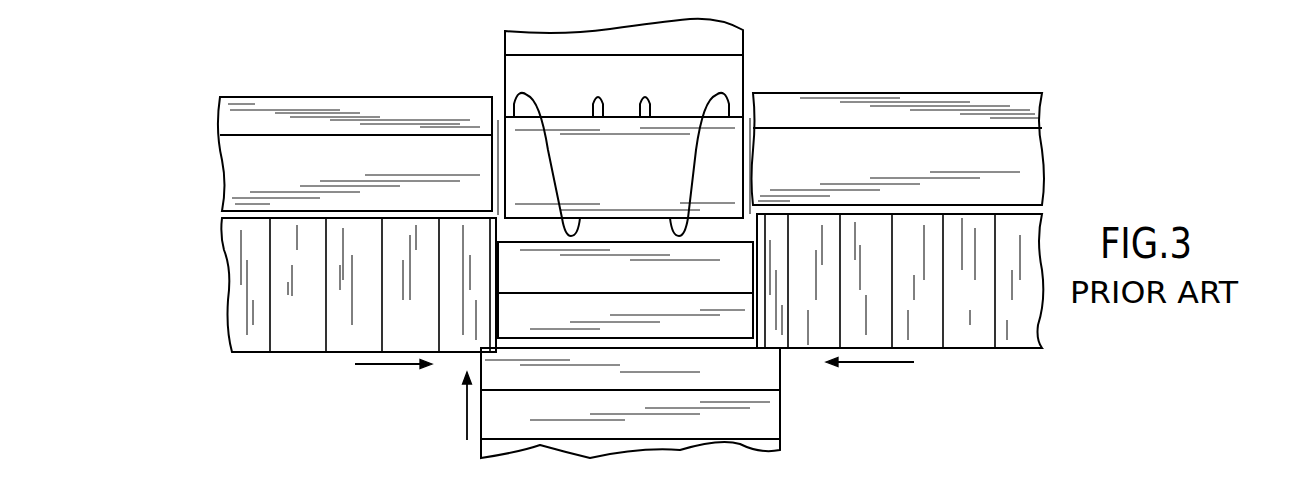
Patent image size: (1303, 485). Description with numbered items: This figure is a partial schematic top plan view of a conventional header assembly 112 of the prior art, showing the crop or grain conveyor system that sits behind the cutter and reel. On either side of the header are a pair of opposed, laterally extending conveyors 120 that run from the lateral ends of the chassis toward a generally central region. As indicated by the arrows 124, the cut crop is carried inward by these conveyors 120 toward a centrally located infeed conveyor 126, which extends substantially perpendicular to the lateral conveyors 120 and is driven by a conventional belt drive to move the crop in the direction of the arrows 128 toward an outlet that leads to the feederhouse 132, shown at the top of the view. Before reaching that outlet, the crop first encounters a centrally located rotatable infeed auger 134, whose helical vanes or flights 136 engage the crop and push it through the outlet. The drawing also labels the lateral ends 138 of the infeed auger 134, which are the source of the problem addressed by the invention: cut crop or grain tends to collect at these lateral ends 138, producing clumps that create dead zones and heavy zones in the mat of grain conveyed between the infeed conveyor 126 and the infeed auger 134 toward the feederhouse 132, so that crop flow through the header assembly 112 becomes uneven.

The header assembly 112 is at (986, 66).
The conveyors 120 is at (298, 353).
The arrows 124 is at (385, 366).
The infeed conveyor 126 is at (780, 418).
The arrows 128 is at (467, 413).
The feederhouse 132 is at (752, 34).
The infeed auger 134 is at (643, 192).
The helical vanes or flights 136 is at (520, 96).
The lateral ends 138 is at (505, 182).